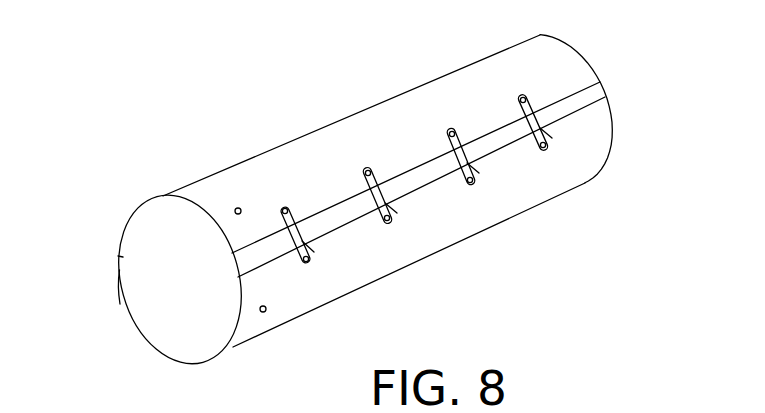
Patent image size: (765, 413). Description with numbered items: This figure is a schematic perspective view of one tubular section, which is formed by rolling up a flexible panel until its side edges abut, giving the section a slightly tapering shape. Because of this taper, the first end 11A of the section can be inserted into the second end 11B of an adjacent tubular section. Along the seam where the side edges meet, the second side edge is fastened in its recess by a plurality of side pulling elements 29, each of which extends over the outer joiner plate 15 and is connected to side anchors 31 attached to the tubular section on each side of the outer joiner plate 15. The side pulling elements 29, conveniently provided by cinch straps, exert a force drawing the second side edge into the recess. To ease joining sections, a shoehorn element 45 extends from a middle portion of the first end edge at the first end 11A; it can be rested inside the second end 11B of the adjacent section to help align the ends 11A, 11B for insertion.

The first end 11A is at (147, 203).
The second end 11B is at (583, 53).
The outer joiner plate 15 is at (507, 144).
The side pulling elements 29 is at (302, 232).
The side anchors 31 is at (392, 221).
The shoehorn element 45 is at (118, 297).